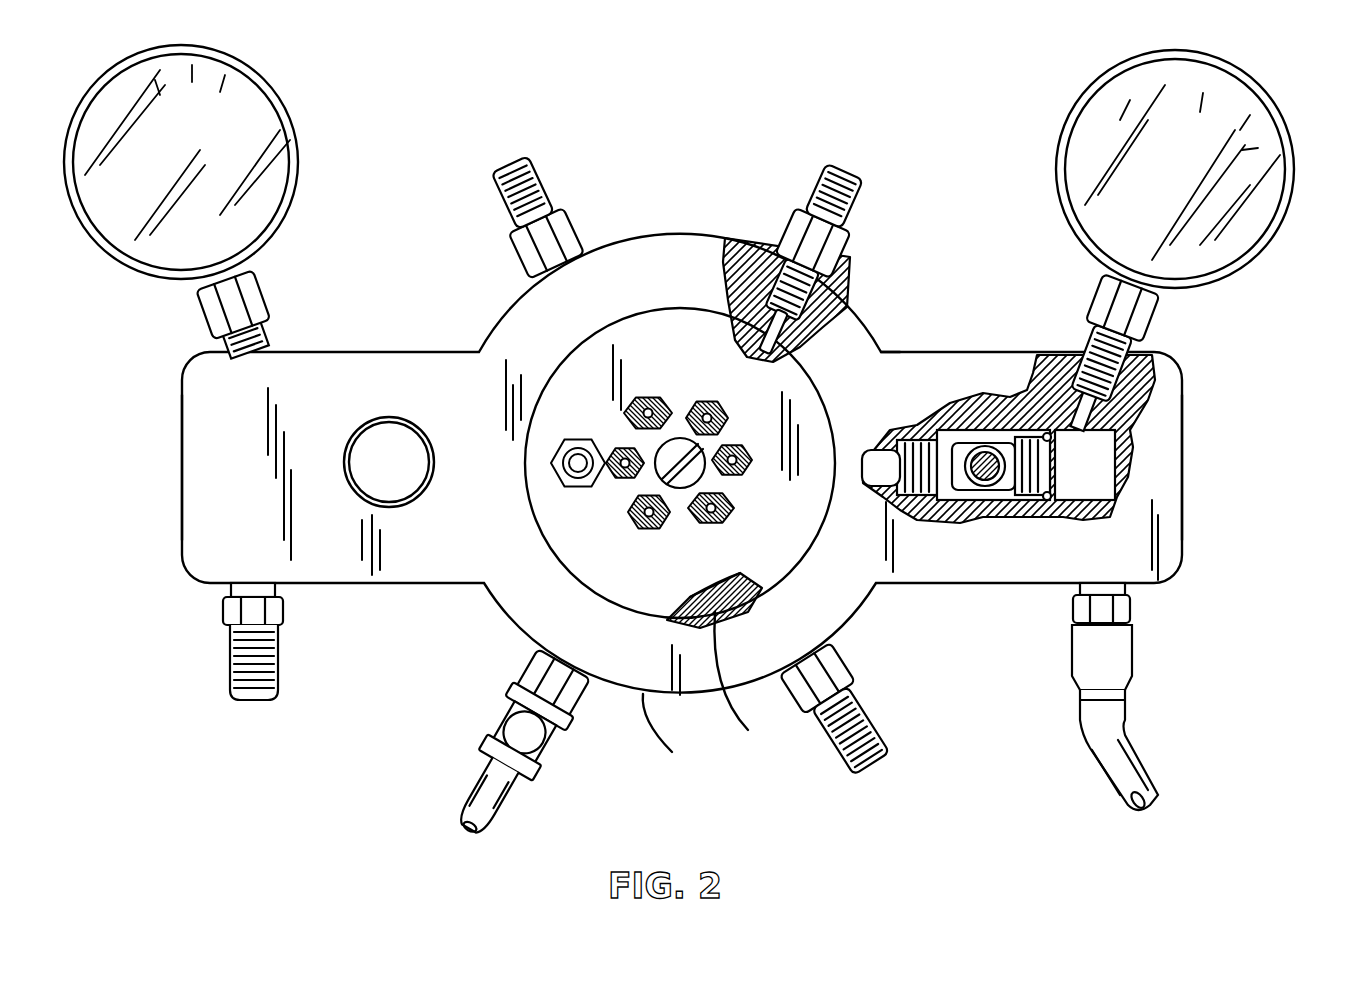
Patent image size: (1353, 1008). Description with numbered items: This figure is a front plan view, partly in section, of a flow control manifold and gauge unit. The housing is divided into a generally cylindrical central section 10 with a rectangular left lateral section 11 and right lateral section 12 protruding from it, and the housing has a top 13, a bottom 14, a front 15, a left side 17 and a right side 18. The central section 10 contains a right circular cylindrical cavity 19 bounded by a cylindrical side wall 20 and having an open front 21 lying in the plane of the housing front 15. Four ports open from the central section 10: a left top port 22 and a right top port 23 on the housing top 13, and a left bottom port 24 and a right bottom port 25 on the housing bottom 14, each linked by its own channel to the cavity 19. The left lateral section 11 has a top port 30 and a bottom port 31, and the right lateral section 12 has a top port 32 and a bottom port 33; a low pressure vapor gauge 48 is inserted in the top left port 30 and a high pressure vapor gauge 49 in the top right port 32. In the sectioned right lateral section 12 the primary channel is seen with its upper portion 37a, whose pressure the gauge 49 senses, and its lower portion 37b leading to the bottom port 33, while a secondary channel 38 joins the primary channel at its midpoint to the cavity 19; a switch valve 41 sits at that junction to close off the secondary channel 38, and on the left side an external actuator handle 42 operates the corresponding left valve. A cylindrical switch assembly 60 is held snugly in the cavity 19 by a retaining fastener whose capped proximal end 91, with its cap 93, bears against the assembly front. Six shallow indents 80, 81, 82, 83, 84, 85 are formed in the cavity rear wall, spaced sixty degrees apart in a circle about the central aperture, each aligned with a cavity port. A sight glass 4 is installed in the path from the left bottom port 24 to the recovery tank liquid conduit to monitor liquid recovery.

The sight glass 4 is at (545, 746).
The central section 10 is at (636, 278).
The left lateral section 11 is at (224, 404).
The right lateral section 12 is at (959, 384).
The housing top 13 is at (935, 352).
The housing bottom 14 is at (672, 730).
The housing front 15 is at (449, 412).
The left side 17 is at (182, 413).
The right side 18 is at (1182, 464).
The cylindrical cavity 19 is at (744, 679).
The cylindrical side wall 20 is at (745, 320).
The open front 21 is at (760, 592).
The left top central port 22 is at (575, 230).
The right top central port 23 is at (848, 262).
The left bottom central port 24 is at (535, 759).
The right bottom central port 25 is at (832, 666).
The top left lateral port 30 is at (268, 336).
The bottom left lateral port 31 is at (283, 591).
The top right lateral port 32 is at (1140, 351).
The bottom right lateral port 33 is at (1130, 591).
The right lateral primary channel upper portion 37a is at (1133, 422).
The right lateral primary channel lower portion 37b is at (1095, 505).
The right lateral secondary channel 38 is at (868, 452).
The switch valve 41 is at (990, 500).
The actuator handle 42 is at (428, 492).
The low pressure vapor gauge 48 is at (258, 69).
The high pressure vapor gauge 49 is at (1283, 101).
The switch assembly 60 is at (688, 348).
The first indent 80 is at (620, 457).
The second indent 81 is at (640, 410).
The third indent 82 is at (715, 412).
The fourth indent 83 is at (750, 462).
The fifth indent 84 is at (733, 509).
The sixth indent 85 is at (642, 526).
The proximal end 91 is at (710, 489).
The cap 93 is at (684, 482).